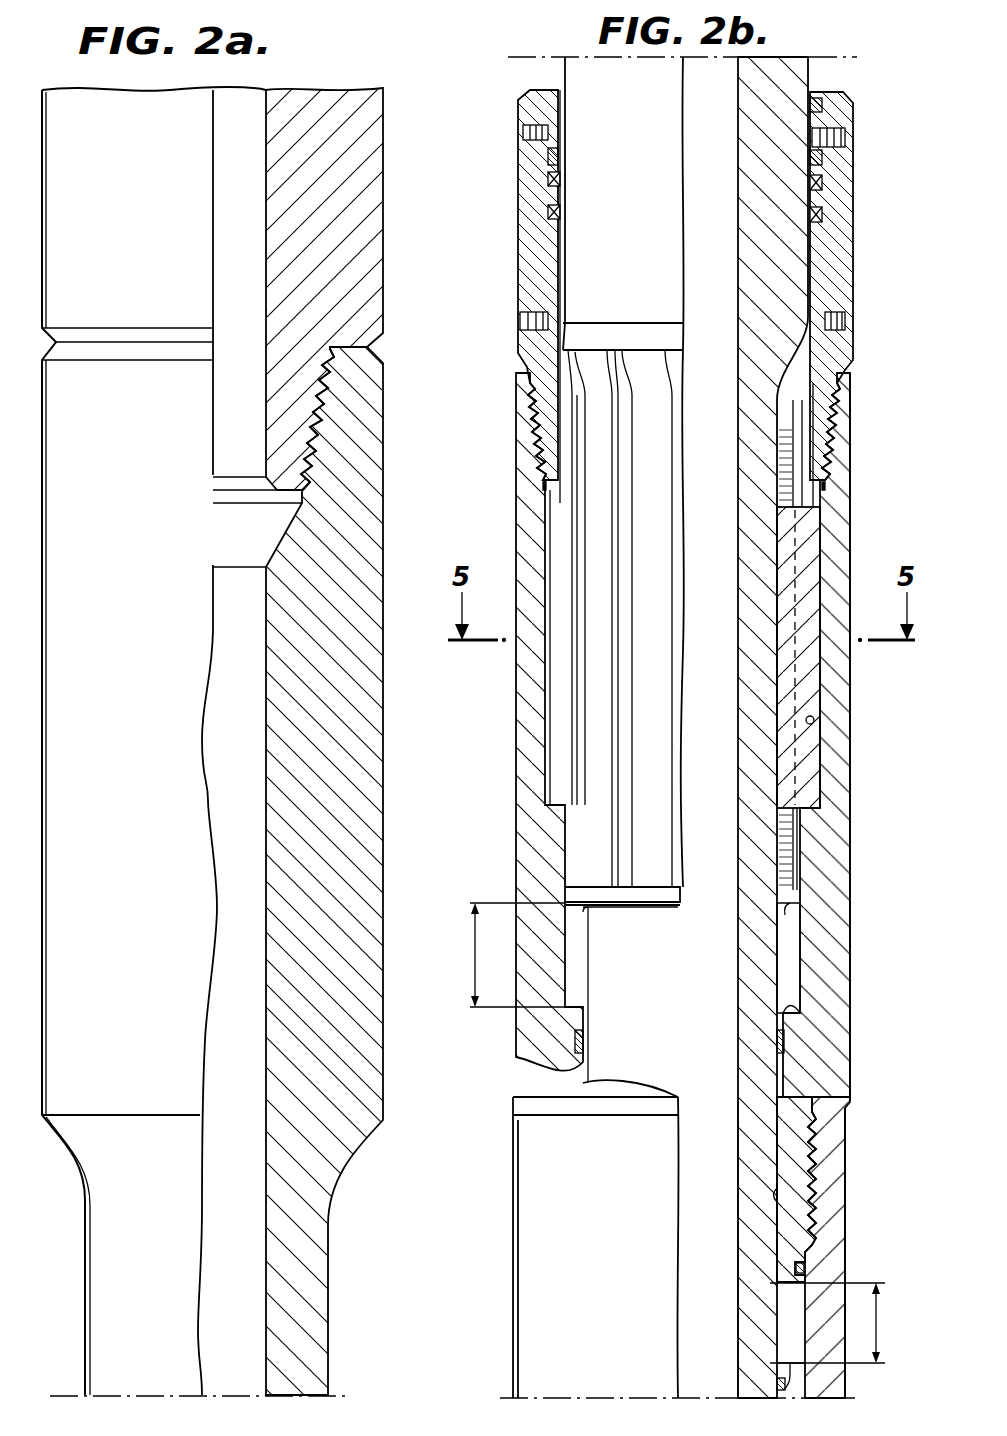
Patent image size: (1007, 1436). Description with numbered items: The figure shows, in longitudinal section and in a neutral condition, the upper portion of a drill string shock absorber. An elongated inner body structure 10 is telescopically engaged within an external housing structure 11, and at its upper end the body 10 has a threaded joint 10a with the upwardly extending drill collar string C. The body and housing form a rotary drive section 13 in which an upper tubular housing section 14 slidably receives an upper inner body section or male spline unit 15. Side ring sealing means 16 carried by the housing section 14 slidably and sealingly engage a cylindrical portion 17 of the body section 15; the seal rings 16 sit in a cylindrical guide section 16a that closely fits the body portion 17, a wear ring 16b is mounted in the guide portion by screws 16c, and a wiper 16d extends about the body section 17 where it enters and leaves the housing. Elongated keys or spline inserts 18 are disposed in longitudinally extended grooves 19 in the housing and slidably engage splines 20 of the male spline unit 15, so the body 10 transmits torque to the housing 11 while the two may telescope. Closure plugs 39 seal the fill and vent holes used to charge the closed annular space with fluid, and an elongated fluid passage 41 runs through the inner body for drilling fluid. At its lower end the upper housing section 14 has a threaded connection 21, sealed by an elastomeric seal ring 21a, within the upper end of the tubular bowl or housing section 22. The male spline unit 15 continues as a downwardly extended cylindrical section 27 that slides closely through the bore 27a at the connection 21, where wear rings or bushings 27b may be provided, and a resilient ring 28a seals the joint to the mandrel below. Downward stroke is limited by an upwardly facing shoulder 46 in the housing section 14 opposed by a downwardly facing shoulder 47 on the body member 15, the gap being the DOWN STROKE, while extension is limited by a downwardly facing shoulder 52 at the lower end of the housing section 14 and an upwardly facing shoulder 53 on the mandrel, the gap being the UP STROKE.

In FIG. 2A, the drill collar string C is at (372, 95).
In FIG. 2B, the inner body structure 10 is at (565, 892).
In FIG. 2A, the threaded joint 10a is at (318, 432).
In FIG. 2B, the external housing structure 11 is at (848, 840).
In FIG. 2B, the rotary drive section 13 is at (530, 523).
In FIG. 2B, the upper tubular housing section 14 is at (838, 538).
In FIG. 2B, the upper inner body section (male spline unit) 15 is at (762, 723).
In FIG. 2B, the seal ring sealing means 16 is at (548, 215).
In FIG. 2B, the cylindrical guide section 16a is at (845, 210).
In FIG. 2B, the seal ring 16b is at (548, 156).
In FIG. 2B, the screws 16c is at (525, 133).
In FIG. 2B, the wiper 16d is at (822, 108).
In FIG. 2B, the cylindrical portion of body section 17 is at (625, 472).
In FIG. 2B, the keys or spline inserts 18 is at (805, 678).
In FIG. 2B, the recesses or grooves 19 is at (812, 726).
In FIG. 2B, the splines 20 is at (780, 490).
In FIG. 2B, the threaded connection 21 is at (848, 1247).
In FIG. 2B, the elastomeric seal ring 21a is at (805, 1258).
In FIG. 2B, the tubular bowl or housing section 22 is at (835, 1386).
In FIG. 2B, the downwardly extended cylindrical section 27 is at (740, 1148).
In FIG. 2B, the bore 27a is at (770, 1188).
In FIG. 2B, the wear rings or bushings 27b is at (783, 1043).
In FIG. 2B, the resilient ring 28a is at (775, 1385).
In FIG. 2B, the closure plugs 39 is at (845, 326).
In FIG. 2A, the fluid passage 41 is at (230, 1098).
In FIG. 2B, the fluid passage 41 is at (712, 982).
In FIG. 2B, the upwardly facing shoulder 46 is at (795, 1000).
In FIG. 2B, the downwardly facing shoulder 47 is at (795, 910).
In FIG. 2B, the downwardly facing shoulder 52 is at (795, 1268).
In FIG. 2B, the upwardly facing shoulder 53 is at (790, 1365).